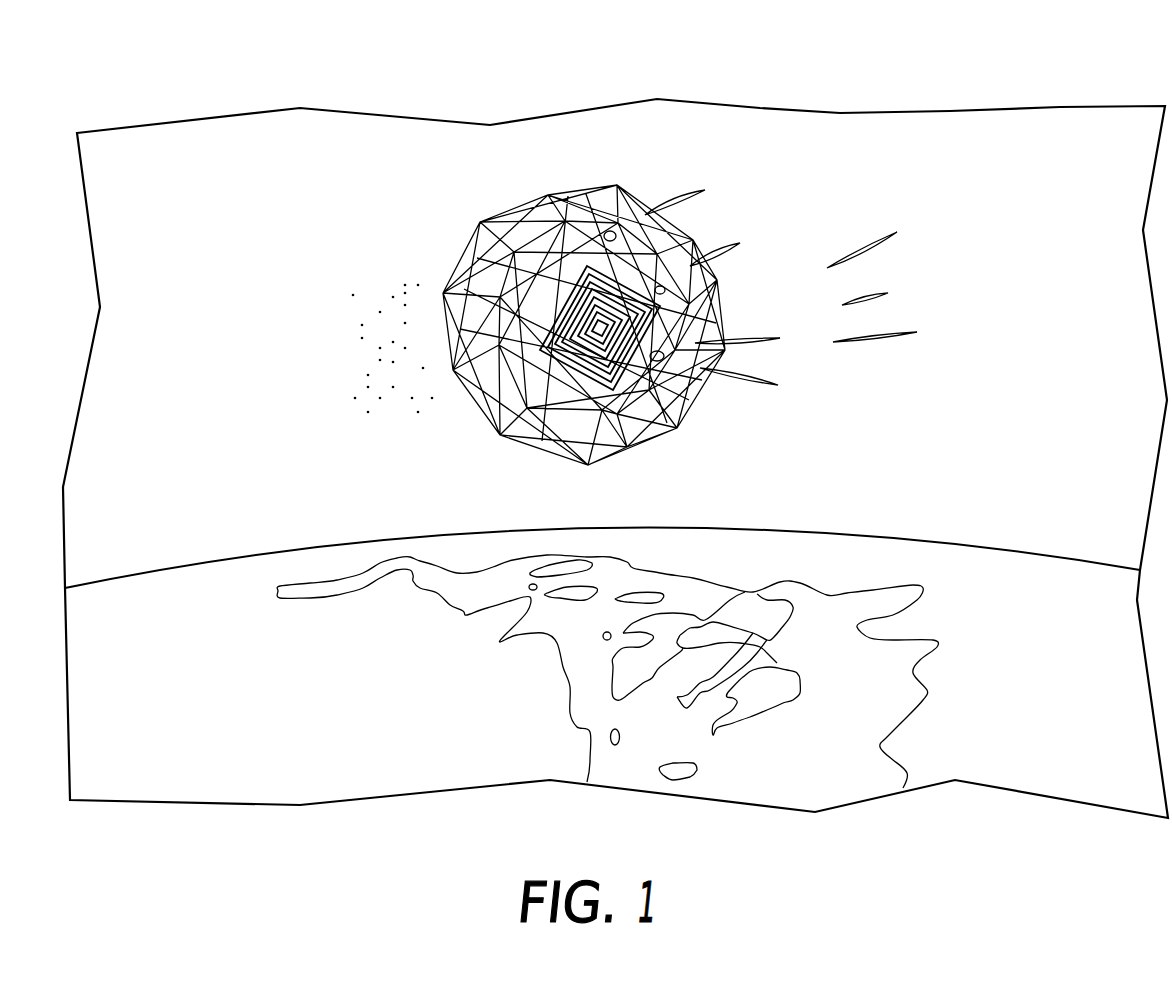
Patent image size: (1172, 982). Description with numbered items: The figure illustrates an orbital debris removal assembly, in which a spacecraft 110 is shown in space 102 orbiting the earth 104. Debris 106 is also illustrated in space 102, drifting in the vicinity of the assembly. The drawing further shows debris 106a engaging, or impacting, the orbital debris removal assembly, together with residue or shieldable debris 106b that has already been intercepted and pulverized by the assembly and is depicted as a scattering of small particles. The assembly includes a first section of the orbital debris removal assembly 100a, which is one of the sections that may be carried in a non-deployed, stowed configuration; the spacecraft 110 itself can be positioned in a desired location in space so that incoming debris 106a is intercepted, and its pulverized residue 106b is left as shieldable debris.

The first section of the orbital debris removal assembly 100a is at (490, 168).
The space 102 is at (1012, 147).
The earth 104 is at (988, 757).
The debris 106 is at (883, 297).
The debris engaging the orbital debris removal assembly 106a is at (697, 240).
The residue debris 106b is at (352, 338).
The spacecraft 110 is at (537, 335).